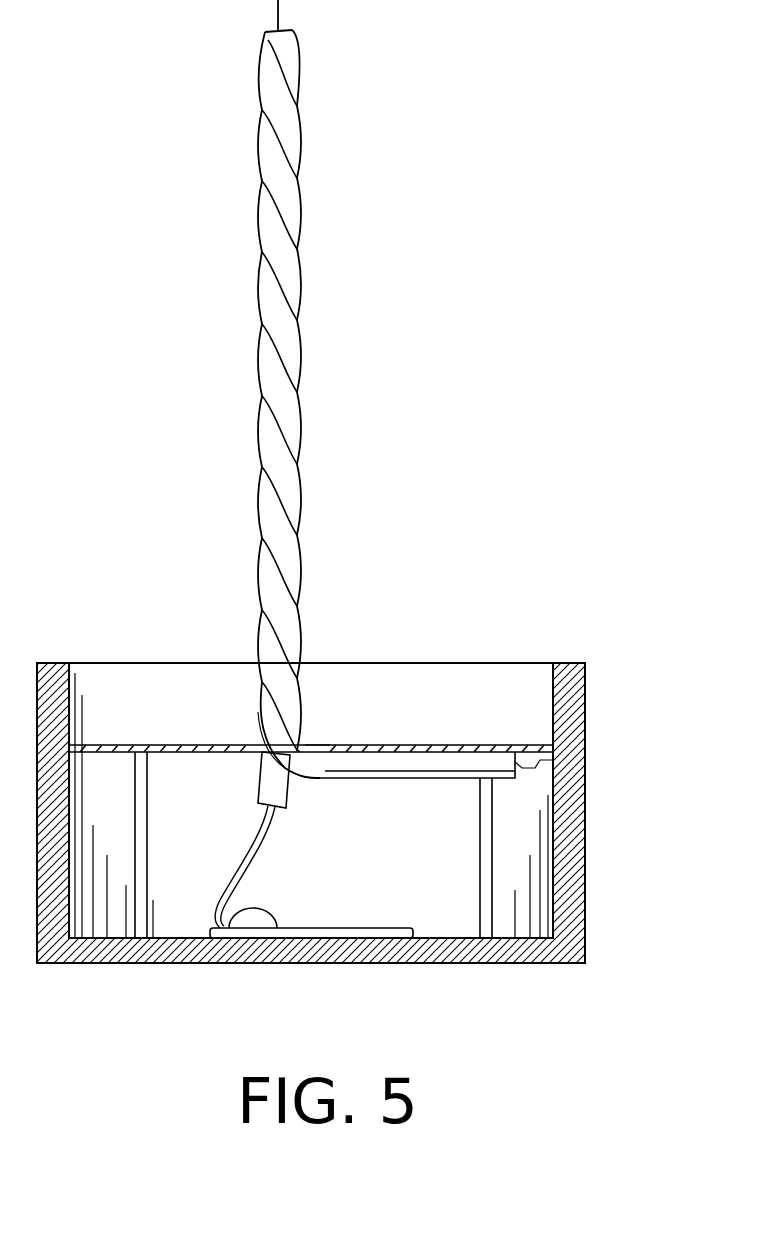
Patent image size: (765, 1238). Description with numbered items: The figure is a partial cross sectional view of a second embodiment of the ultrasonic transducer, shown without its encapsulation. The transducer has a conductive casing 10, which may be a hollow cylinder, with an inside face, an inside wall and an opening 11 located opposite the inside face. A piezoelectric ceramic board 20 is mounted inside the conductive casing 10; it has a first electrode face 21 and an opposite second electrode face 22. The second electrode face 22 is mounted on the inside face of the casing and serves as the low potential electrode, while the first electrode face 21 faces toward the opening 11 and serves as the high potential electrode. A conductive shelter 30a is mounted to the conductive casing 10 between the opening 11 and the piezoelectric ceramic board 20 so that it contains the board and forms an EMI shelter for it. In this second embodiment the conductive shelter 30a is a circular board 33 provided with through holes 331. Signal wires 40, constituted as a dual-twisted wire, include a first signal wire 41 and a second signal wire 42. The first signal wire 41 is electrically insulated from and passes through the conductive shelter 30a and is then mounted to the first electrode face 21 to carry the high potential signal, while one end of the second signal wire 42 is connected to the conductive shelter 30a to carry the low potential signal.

The conductive casing 10 is at (585, 834).
The opening 11 is at (553, 710).
The piezoelectric ceramic board 20 is at (388, 924).
The first electrode face 21 is at (309, 926).
The second electrode face 22 is at (384, 962).
The conductive shelter 30a is at (319, 744).
The circular board 33 is at (462, 748).
The through holes 331 is at (253, 745).
The signal wires 40 is at (320, 250).
The first signal wire 41 is at (247, 745).
The second signal wire 42 is at (372, 760).